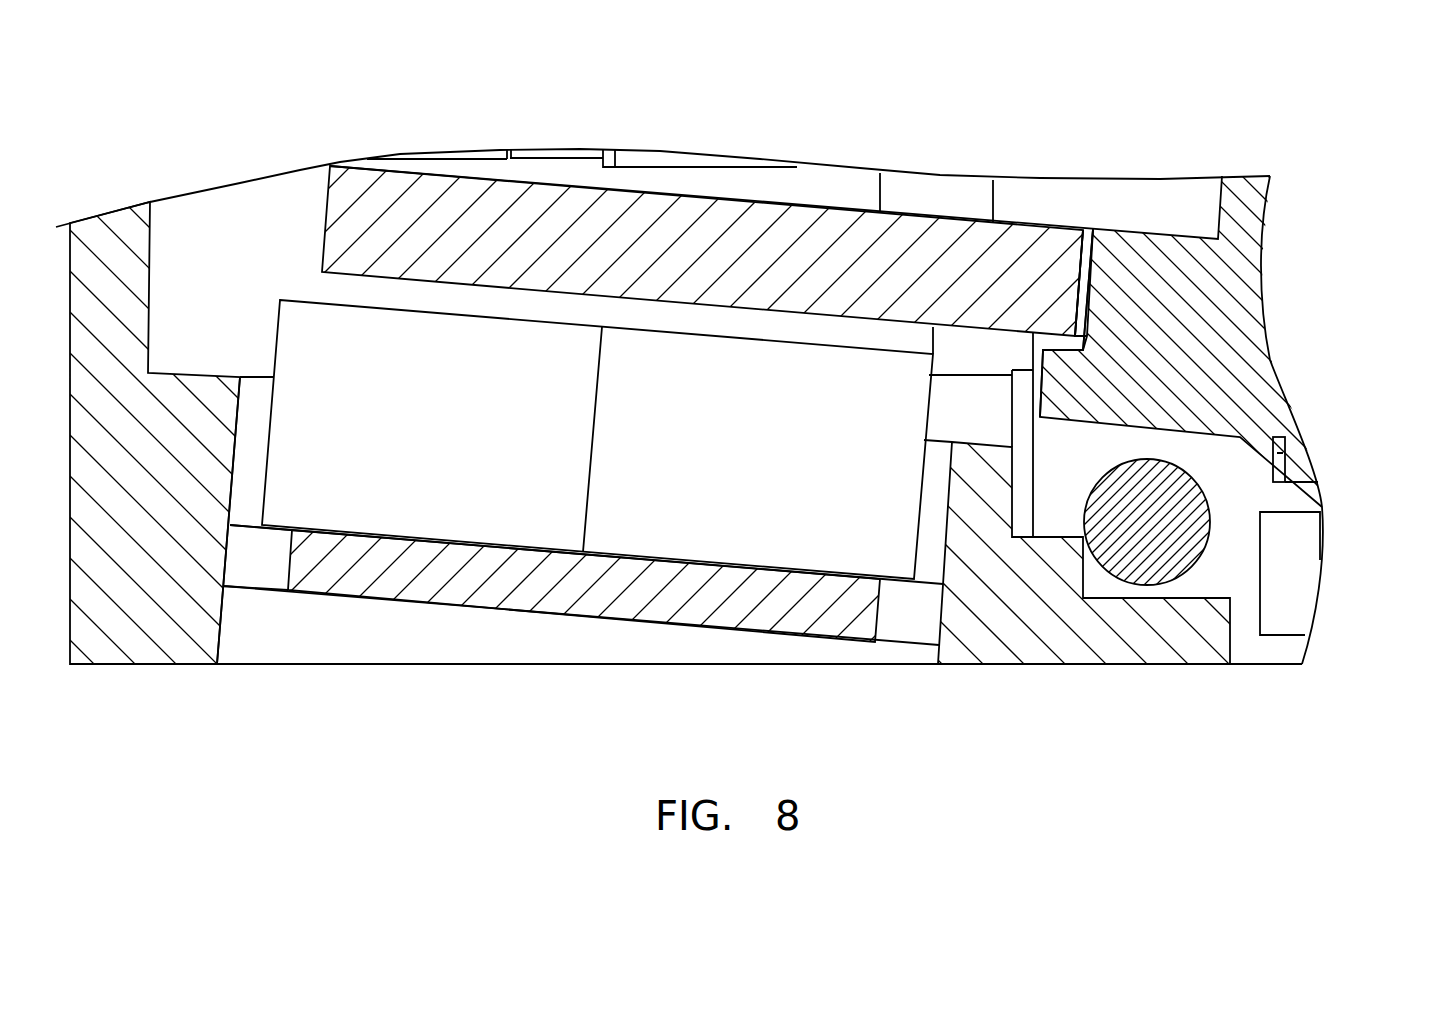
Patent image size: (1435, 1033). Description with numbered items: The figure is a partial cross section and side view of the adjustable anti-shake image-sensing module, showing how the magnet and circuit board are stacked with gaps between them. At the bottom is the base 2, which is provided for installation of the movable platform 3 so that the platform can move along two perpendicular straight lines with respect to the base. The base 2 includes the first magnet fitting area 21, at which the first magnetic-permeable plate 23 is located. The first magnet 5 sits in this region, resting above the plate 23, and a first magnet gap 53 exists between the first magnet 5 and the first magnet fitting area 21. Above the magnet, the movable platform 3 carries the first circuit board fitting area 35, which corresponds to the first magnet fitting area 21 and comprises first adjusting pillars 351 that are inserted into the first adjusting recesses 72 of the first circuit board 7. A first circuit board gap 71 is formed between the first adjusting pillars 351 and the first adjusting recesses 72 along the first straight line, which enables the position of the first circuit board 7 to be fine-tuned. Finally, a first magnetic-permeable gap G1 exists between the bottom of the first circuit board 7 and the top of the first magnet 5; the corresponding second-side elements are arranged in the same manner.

The base 2 is at (100, 638).
The first magnet fitting area 21 is at (280, 636).
The first magnetic-permeable plate 23 is at (437, 583).
The first magnet 5 is at (634, 537).
The first magnet gap 53 is at (931, 556).
The first circuit board 7 is at (460, 200).
The first adjusting recess 72 is at (1078, 262).
The first circuit board gap 71 is at (1094, 290).
The first circuit board fitting area 35 is at (1180, 268).
The movable platform 3 is at (1305, 278).
The first adjusting pillar 351 is at (1088, 312).
The first magnetic-permeable gap G1 is at (678, 318).